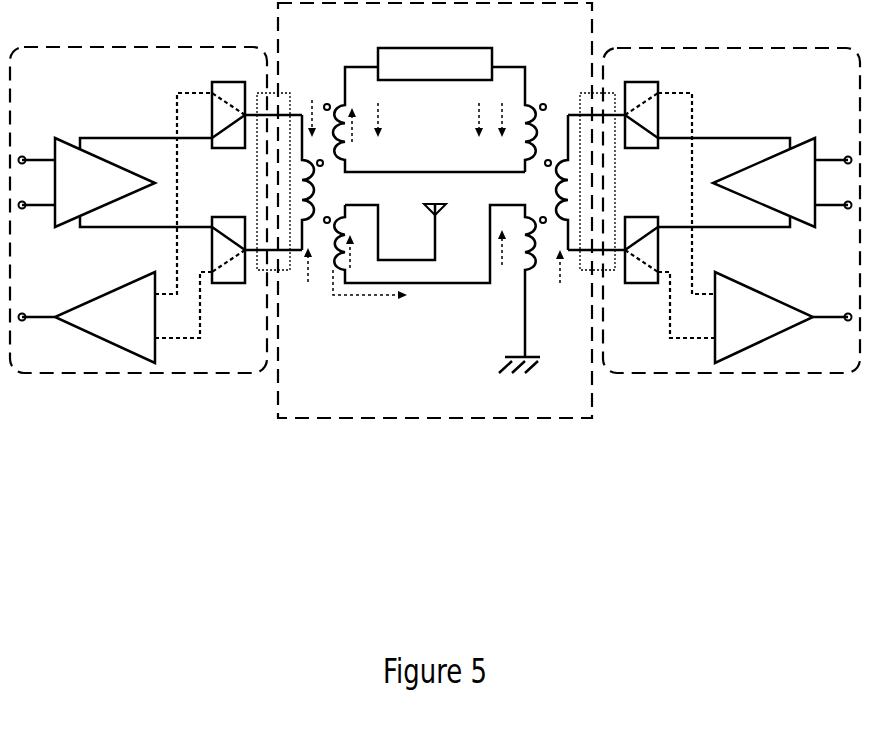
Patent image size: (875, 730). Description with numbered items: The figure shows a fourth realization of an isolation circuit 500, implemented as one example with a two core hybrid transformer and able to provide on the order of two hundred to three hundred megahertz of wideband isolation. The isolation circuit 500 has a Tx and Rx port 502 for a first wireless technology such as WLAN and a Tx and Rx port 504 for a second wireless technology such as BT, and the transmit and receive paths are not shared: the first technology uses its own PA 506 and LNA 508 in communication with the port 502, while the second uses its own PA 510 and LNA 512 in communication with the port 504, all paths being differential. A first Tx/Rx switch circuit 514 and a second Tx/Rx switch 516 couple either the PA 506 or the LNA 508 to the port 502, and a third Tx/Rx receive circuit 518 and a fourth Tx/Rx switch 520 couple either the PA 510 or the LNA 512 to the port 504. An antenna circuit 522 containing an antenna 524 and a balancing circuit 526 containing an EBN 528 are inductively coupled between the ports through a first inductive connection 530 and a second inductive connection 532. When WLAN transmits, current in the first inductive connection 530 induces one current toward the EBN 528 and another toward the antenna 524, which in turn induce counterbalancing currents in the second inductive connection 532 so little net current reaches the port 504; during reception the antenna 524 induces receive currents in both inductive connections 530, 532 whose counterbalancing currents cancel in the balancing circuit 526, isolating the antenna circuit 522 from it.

The isolation circuit 500 is at (435, 210).
The Tx and Rx port 502 is at (285, 272).
The Tx and Rx port 504 is at (585, 275).
The PA 506 is at (57, 229).
The LNA 508 is at (82, 300).
The PA 510 is at (798, 228).
The LNA 512 is at (790, 300).
The first Tx/Rx switch circuit 514 is at (228, 148).
The second Tx/Rx switch 516 is at (212, 283).
The third Tx/Rx receive circuit 518 is at (632, 148).
The fourth Tx/Rx switch 520 is at (645, 283).
The antenna circuit 522 is at (376, 322).
The antenna 524 is at (432, 210).
The balancing circuit 526 is at (344, 44).
The EBN 528 is at (435, 64).
The first inductive connection 530 is at (314, 168).
The second inductive connection 532 is at (558, 170).